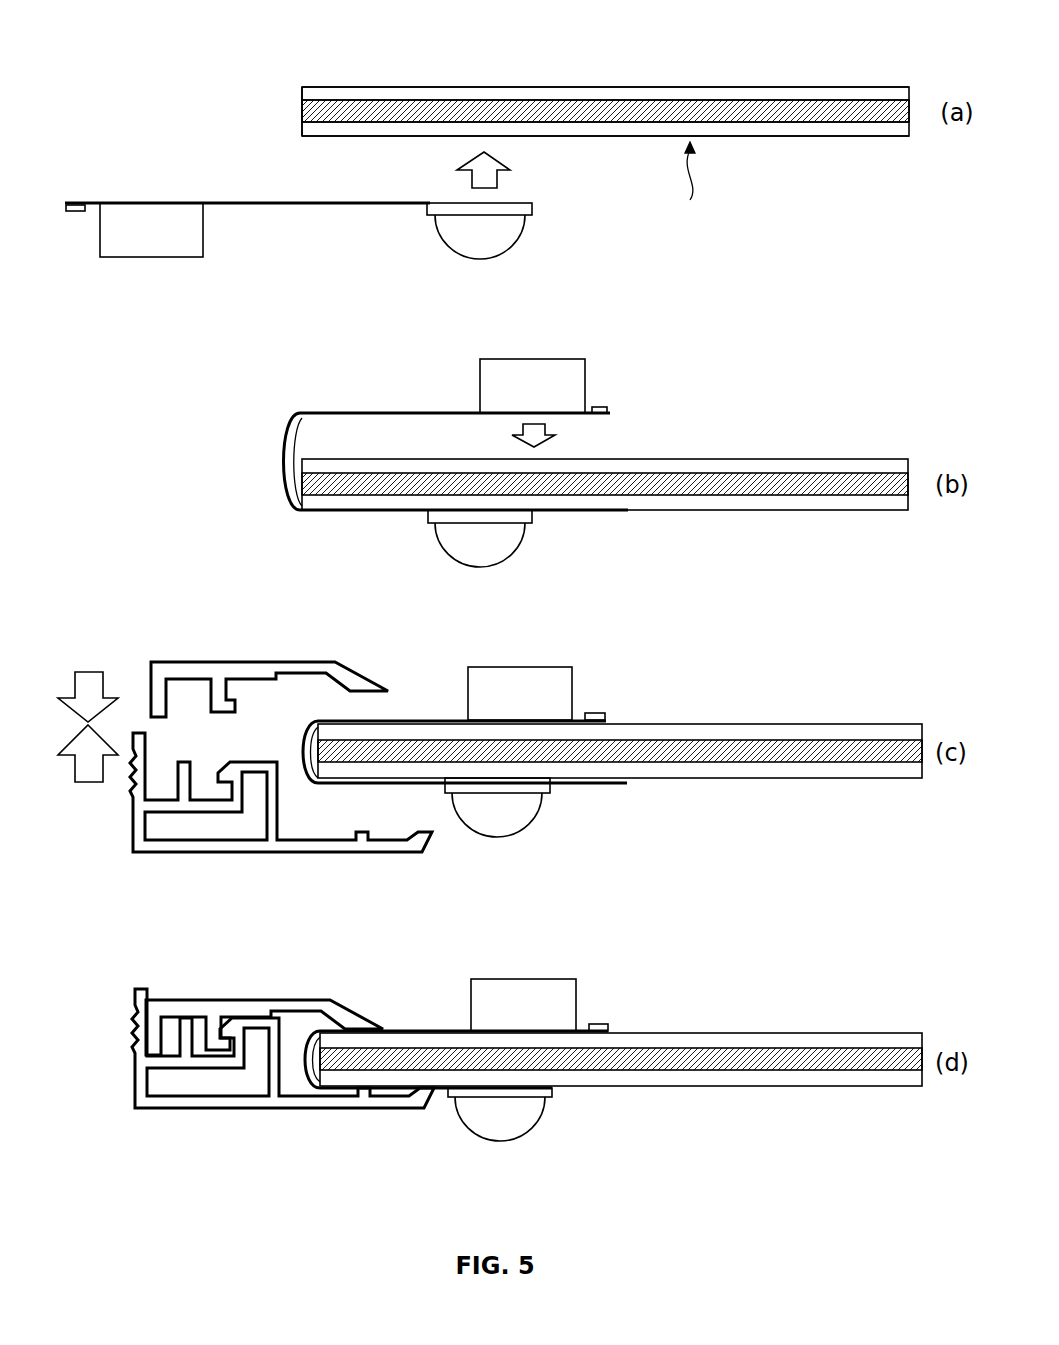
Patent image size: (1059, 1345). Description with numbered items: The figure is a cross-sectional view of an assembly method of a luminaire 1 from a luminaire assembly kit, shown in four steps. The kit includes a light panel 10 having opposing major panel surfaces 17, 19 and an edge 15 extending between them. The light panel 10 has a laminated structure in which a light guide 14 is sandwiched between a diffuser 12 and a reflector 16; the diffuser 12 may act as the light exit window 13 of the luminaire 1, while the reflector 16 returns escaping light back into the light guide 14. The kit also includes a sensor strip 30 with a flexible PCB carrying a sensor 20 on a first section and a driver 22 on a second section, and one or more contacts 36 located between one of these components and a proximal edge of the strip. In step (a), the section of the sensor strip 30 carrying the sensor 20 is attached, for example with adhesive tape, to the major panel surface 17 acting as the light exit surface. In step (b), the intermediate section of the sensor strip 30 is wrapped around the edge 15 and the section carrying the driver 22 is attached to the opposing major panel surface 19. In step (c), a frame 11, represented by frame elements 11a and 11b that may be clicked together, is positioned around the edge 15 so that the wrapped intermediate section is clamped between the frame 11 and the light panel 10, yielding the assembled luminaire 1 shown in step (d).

The luminaire 1 is at (487, 1219).
The light panel 10 is at (636, 137).
The frame 11 is at (262, 1100).
The frame element 11a is at (190, 665).
The frame element 11b is at (220, 850).
The diffuser 12 is at (745, 137).
The light exit window 13 is at (686, 188).
The light guide 14 is at (690, 105).
The edge 15 is at (300, 105).
The reflector 16 is at (778, 88).
The major panel surface 17 is at (851, 137).
The opposing major panel surface 19 is at (855, 88).
The sensor 20 is at (482, 250).
The driver 22 is at (152, 258).
The sensor strip 30 is at (310, 205).
The contacts 36 is at (76, 212).